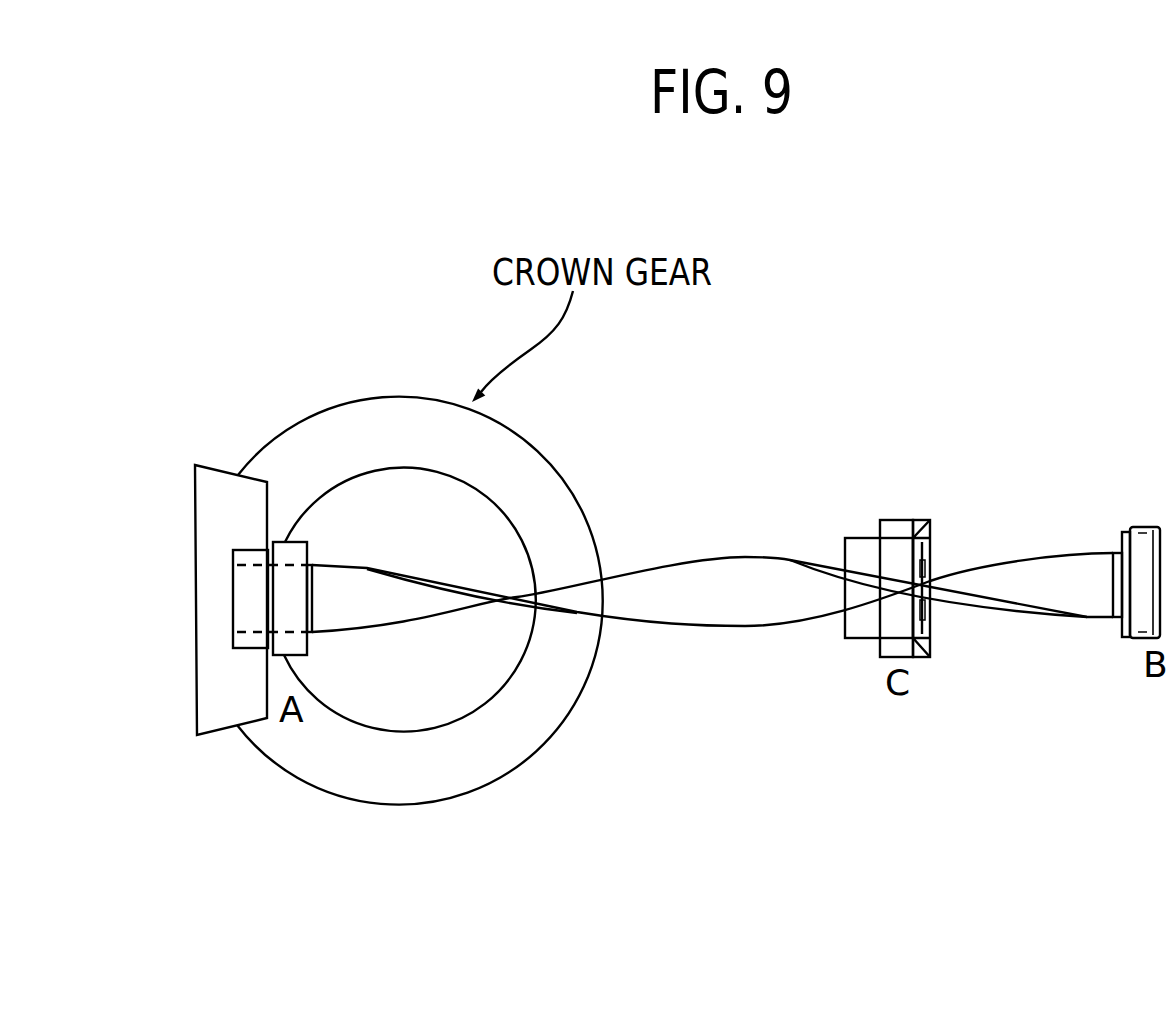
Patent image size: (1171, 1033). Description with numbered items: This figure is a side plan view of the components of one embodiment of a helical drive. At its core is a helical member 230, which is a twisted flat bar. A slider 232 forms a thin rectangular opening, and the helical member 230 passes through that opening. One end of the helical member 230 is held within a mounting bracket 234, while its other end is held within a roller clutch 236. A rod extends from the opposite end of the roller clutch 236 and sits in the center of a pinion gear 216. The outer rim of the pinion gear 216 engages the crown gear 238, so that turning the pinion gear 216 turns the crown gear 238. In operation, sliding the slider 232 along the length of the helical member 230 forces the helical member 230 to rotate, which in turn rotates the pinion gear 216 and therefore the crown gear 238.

The pinion gear 216 is at (228, 747).
The helical member 230 is at (741, 546).
The slider 232 is at (905, 520).
The mounting bracket 234 is at (1126, 653).
The roller clutch 236 is at (291, 549).
The crown gear 238 is at (383, 416).